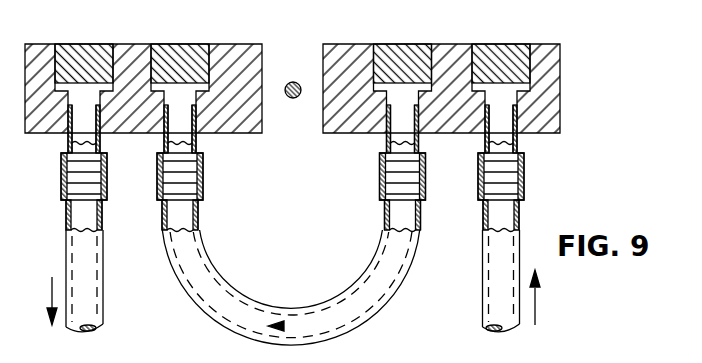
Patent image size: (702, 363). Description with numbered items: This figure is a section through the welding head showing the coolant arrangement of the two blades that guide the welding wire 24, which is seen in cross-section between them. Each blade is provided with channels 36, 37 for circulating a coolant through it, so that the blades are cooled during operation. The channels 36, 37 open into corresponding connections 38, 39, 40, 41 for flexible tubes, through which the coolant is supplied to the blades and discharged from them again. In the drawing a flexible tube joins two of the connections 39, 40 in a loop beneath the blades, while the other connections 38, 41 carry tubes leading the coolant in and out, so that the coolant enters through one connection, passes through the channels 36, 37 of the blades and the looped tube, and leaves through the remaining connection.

The welding wire 24 is at (294, 81).
The channel 36 is at (175, 87).
The channel 37 is at (478, 87).
The connection 38 is at (80, 132).
The connection 39 is at (182, 127).
The connection 40 is at (400, 132).
The connection 41 is at (502, 130).